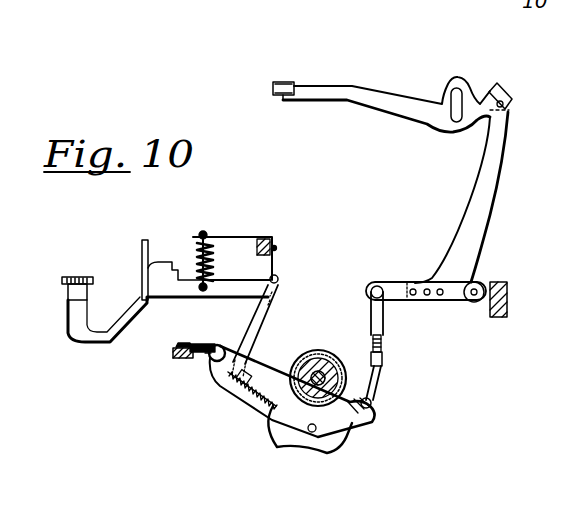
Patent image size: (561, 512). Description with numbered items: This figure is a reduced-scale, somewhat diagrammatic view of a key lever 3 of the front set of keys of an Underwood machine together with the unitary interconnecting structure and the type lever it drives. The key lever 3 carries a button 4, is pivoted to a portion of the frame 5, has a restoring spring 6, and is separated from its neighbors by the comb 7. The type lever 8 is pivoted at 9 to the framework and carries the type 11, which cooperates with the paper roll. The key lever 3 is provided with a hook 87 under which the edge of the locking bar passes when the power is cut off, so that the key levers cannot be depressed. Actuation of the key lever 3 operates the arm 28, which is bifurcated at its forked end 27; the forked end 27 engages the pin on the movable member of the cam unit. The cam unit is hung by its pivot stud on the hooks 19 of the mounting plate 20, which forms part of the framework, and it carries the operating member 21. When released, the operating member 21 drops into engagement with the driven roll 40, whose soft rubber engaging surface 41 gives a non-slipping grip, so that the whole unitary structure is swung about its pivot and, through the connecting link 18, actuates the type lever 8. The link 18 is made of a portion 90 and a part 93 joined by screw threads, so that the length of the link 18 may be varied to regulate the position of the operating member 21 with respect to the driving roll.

The key lever 3 is at (123, 322).
The button 4 is at (70, 278).
The portion of the frame 5 is at (278, 245).
The restoring spring 6 is at (214, 262).
The comb 7 is at (142, 252).
The type lever 8 is at (396, 104).
The pivot 9 is at (478, 293).
The type 11 is at (290, 82).
The connecting link 18 is at (383, 348).
The hook 19 is at (213, 356).
The mounting plate 20 is at (199, 345).
The operating member 21 is at (291, 439).
The forked end 27 is at (244, 385).
The arm 28 is at (265, 332).
The driven roll 40 is at (328, 357).
The engaging surface 41 is at (305, 352).
The hook 87 is at (166, 260).
The portion 90 is at (384, 385).
The part 93 is at (386, 320).